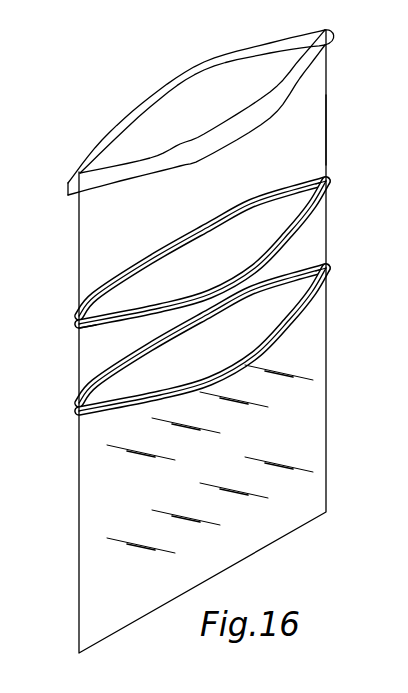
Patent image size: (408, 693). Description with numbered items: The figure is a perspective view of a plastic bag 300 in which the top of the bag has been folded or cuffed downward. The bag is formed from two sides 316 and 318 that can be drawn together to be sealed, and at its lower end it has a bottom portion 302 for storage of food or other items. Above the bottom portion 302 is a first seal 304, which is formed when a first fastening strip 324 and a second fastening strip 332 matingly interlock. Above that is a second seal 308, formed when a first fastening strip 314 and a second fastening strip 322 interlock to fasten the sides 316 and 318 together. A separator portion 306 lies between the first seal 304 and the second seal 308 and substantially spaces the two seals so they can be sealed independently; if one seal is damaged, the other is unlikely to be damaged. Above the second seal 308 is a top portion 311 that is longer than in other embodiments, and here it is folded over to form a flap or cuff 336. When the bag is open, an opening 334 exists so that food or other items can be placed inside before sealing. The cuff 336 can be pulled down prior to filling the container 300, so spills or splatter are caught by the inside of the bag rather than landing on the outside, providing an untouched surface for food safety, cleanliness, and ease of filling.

The plastic bag 300 is at (207, 341).
The bottom portion 302 is at (318, 337).
The first seal 304 is at (327, 270).
The separator portion 306 is at (318, 232).
The second seal 308 is at (327, 182).
The top portion 311 is at (319, 140).
The first fastening strip 314 is at (107, 297).
The side 316 is at (102, 141).
The side 318 is at (238, 114).
The second fastening strip 322 is at (95, 327).
The first fastening strip 324 is at (97, 395).
The second fastening strip 332 is at (97, 415).
The opening 334 is at (200, 83).
The flap or cuff 336 is at (313, 63).